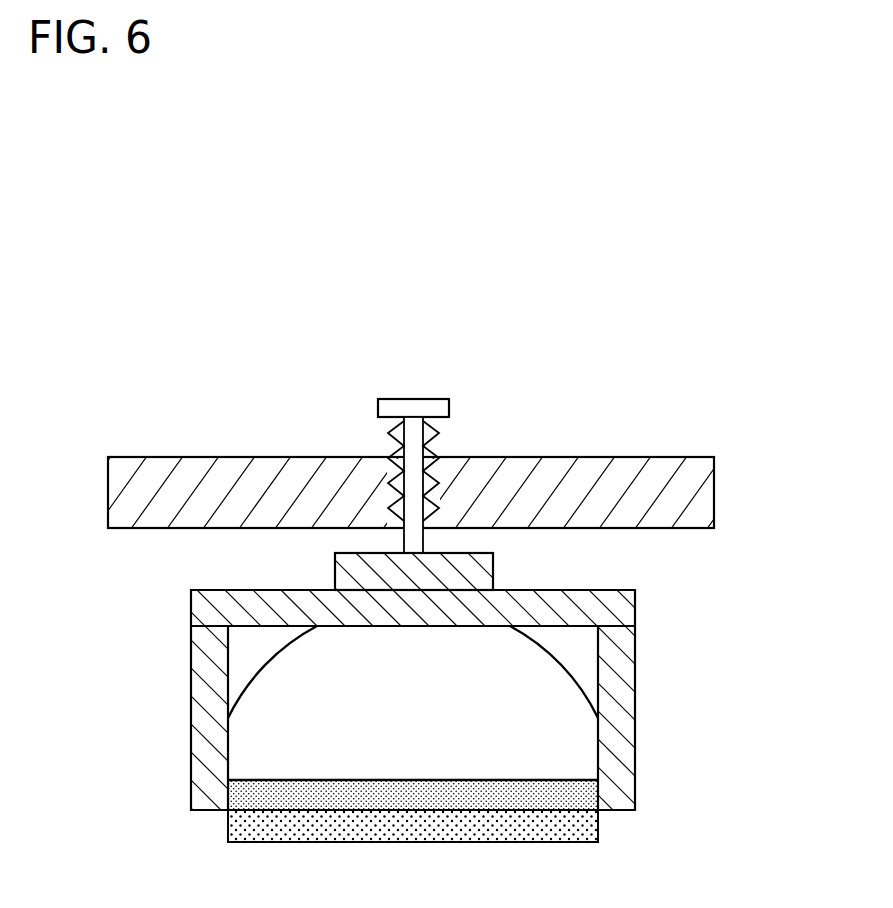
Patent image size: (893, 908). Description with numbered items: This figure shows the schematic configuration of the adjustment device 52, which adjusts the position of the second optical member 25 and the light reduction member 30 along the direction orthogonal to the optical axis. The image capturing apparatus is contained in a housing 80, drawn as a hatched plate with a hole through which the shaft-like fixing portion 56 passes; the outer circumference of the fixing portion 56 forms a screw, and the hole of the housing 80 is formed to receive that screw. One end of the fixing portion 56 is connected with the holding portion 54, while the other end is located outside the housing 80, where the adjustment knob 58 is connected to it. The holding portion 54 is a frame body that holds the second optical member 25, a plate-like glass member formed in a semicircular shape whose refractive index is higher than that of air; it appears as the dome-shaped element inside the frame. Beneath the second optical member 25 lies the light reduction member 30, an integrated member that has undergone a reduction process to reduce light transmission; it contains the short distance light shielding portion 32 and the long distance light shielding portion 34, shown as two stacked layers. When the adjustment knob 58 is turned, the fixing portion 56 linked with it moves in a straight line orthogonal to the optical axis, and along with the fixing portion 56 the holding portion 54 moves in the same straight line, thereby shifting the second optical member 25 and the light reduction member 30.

The adjustment device 52 is at (500, 252).
The housing 80 is at (675, 468).
The adjustment knob 58 is at (418, 417).
The fixing portion 56 is at (397, 447).
The holding portion 54 is at (636, 676).
The second optical member 25 is at (260, 720).
The light reduction member 30 is at (503, 806).
The short distance light shielding portion 32 is at (572, 798).
The long distance light shielding portion 34 is at (572, 828).